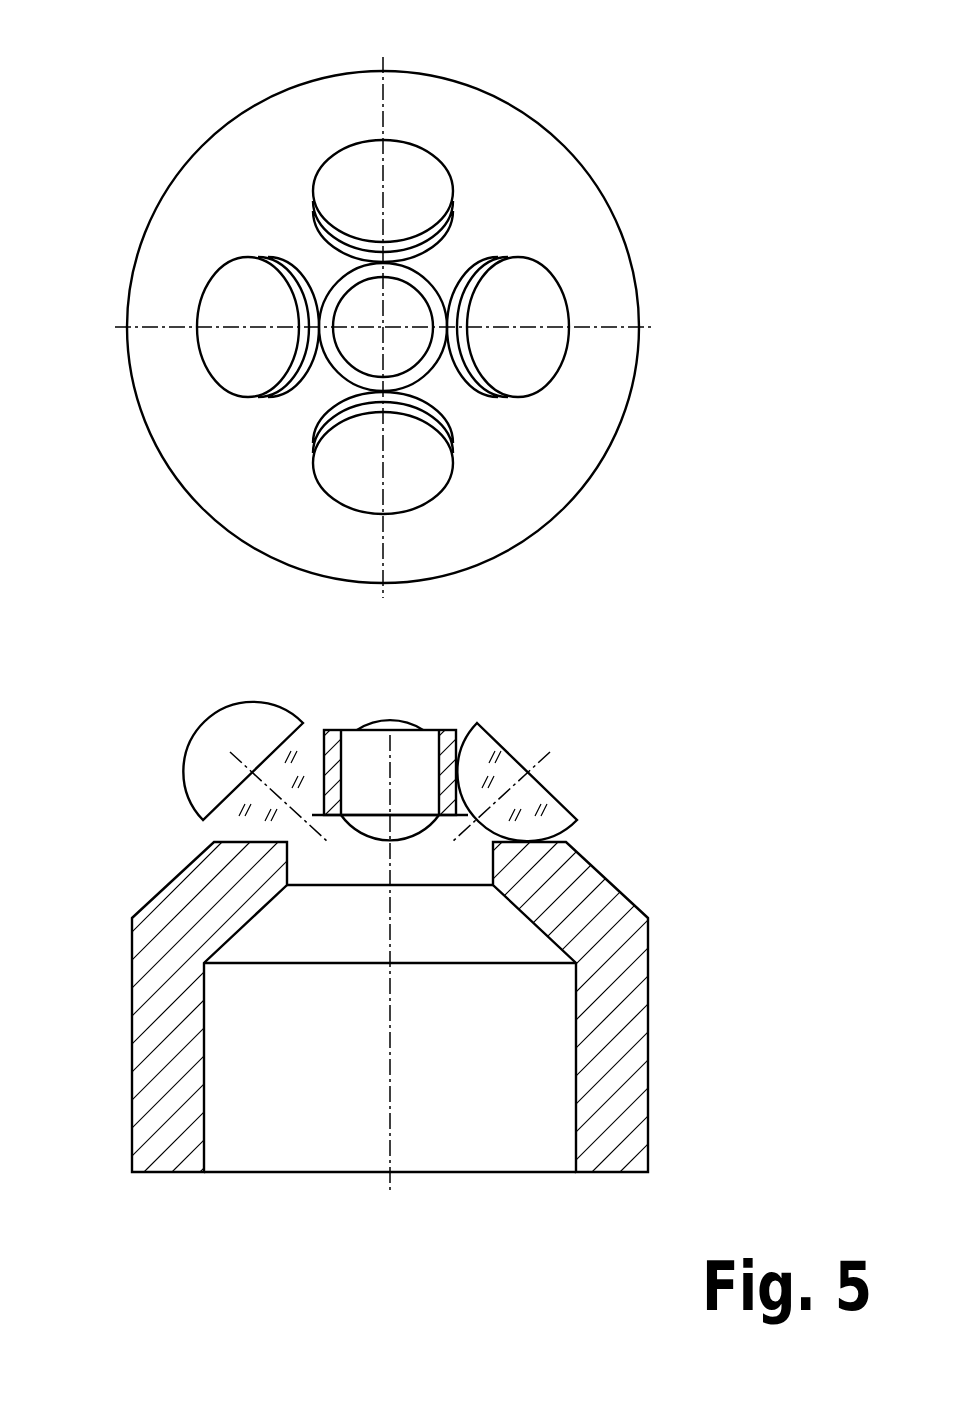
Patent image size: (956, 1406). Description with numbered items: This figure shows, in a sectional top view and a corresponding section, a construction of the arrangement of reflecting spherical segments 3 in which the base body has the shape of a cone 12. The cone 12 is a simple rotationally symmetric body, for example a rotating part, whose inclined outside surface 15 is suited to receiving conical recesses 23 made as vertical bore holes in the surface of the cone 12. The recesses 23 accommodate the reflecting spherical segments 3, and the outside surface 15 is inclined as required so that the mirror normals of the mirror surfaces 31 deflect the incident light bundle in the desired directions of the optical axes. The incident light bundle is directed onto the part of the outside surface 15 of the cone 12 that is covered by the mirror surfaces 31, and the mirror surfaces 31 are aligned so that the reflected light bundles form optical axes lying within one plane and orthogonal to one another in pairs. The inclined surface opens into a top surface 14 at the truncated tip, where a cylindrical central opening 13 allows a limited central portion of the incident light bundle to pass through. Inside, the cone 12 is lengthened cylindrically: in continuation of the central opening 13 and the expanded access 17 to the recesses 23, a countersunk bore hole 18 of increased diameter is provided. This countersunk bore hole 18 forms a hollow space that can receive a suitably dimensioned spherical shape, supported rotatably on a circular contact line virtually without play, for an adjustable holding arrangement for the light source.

The reflecting spherical segment 3 is at (265, 763).
The cone 12 is at (505, 100).
The central opening 13 is at (413, 342).
The top surface 14 is at (433, 355).
The outside surface 15 is at (608, 875).
The expanded access 17 is at (358, 868).
The countersunk bore hole 18 is at (445, 1035).
The conical recess 23 is at (455, 790).
The mirror surface 31 is at (240, 782).